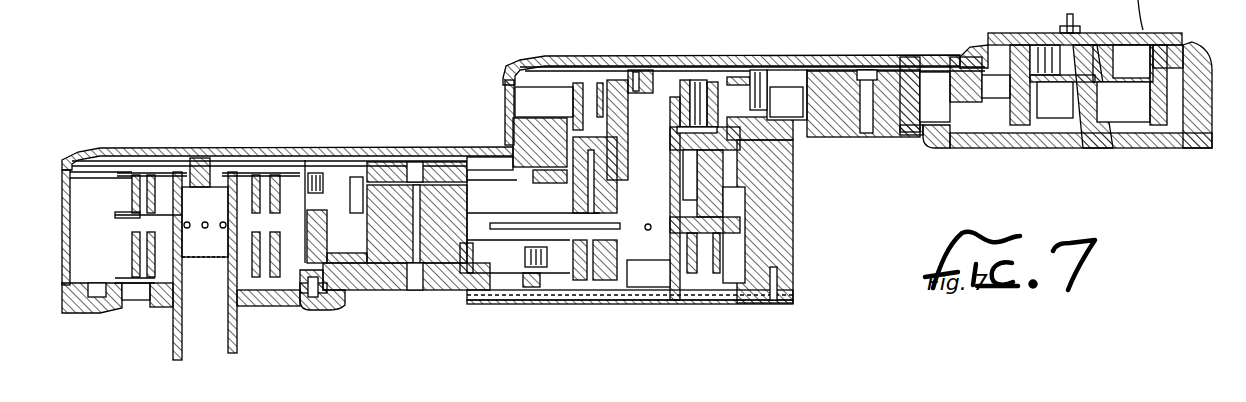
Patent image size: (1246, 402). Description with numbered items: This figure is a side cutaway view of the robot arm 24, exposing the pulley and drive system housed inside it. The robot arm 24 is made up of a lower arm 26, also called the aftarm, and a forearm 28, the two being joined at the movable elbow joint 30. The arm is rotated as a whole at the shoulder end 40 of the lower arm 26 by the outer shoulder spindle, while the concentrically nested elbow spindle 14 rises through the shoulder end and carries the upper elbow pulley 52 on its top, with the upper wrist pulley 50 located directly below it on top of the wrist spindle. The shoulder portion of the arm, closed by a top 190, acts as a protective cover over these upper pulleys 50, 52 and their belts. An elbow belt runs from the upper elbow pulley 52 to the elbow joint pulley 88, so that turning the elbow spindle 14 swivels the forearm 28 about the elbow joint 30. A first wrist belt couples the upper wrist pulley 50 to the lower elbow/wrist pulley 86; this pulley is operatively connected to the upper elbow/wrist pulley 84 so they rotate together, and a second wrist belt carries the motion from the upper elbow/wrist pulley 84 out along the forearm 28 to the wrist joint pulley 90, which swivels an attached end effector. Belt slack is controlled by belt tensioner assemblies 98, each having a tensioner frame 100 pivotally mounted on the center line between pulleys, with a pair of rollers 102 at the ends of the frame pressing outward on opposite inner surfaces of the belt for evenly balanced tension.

The elbow spindle 14 is at (233, 338).
The robot arm 24 is at (660, 36).
The lower arm 26 is at (262, 147).
The forearm 28 is at (878, 55).
The elbow joint 30 is at (505, 101).
The shoulder end 40 is at (91, 9).
The upper wrist pulley 50 is at (132, 256).
The upper elbow pulley 52 is at (128, 192).
The upper elbow/wrist pulley 84 is at (568, 112).
The lower elbow/wrist pulley 86 is at (723, 255).
The elbow joint pulley 88 is at (572, 198).
The wrist joint pulley 90 is at (1008, 104).
The belt tensioner assembly 98 is at (467, 0).
The tensioner frame 100 is at (416, 0).
The rollers 102 is at (303, 0).
The top 190 is at (165, 148).